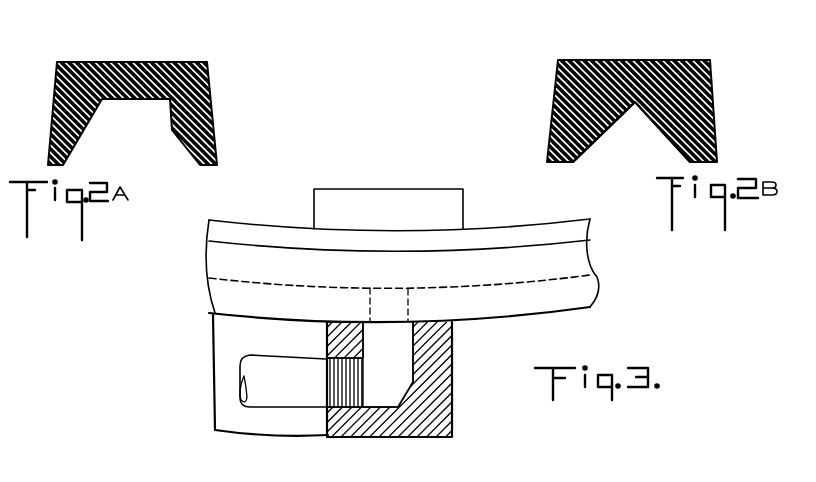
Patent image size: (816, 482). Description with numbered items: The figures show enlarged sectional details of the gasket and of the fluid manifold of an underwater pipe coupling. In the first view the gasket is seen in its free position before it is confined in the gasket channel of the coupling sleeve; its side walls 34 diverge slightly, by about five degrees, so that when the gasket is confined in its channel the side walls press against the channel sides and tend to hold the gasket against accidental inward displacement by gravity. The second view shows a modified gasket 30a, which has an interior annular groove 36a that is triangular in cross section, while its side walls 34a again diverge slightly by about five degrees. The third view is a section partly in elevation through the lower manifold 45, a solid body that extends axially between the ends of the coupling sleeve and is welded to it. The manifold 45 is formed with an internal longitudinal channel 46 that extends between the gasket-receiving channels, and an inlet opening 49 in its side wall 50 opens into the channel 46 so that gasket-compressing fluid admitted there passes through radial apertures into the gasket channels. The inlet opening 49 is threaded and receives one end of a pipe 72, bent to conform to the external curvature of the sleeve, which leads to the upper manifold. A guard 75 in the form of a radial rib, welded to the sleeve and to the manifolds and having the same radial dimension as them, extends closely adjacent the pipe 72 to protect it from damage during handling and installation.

In FIG. 2A, the side walls 34 is at (212, 103).
In FIG. 2B, the gasket 30a is at (679, 62).
In FIG. 2B, the side walls 34a is at (715, 98).
In FIG. 2B, the interior annular groove 36a is at (608, 142).
In FIG. 3, the lower manifold 45 is at (430, 423).
In FIG. 3, the internal longitudinal channel 46 is at (390, 383).
In FIG. 3, the inlet opening 49 is at (333, 398).
In FIG. 3, the side wall 50 is at (334, 336).
In FIG. 3, the pipe 72 is at (260, 390).
In FIG. 3, the guard 75 is at (225, 340).